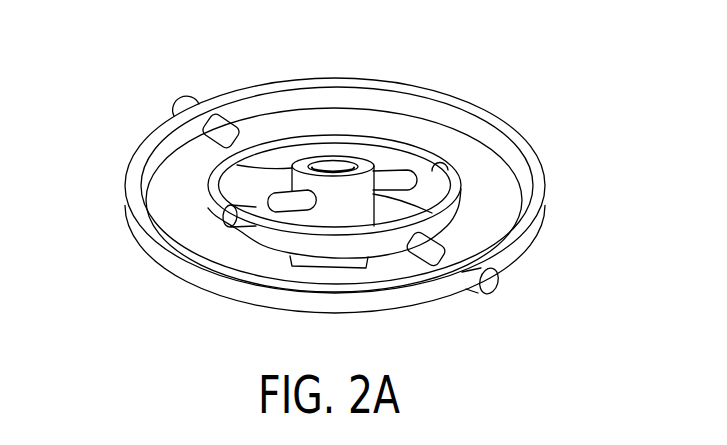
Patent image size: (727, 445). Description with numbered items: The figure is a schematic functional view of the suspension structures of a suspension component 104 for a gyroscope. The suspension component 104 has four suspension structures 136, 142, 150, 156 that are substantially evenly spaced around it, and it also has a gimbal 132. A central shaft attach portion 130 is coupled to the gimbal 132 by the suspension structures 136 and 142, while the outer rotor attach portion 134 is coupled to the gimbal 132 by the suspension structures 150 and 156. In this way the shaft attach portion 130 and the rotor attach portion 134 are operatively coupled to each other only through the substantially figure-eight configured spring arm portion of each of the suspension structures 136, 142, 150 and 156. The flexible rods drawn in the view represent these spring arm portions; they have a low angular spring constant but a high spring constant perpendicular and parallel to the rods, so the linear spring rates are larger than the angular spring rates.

The suspension component 104 is at (514, 90).
The shaft attach portion 130 is at (348, 210).
The gimbal 132 is at (280, 232).
The rotor attach portion 134 is at (183, 277).
The suspension structure 136 is at (287, 200).
The suspension structure 142 is at (396, 172).
The suspension structure 150 is at (440, 253).
The suspension structure 156 is at (220, 130).